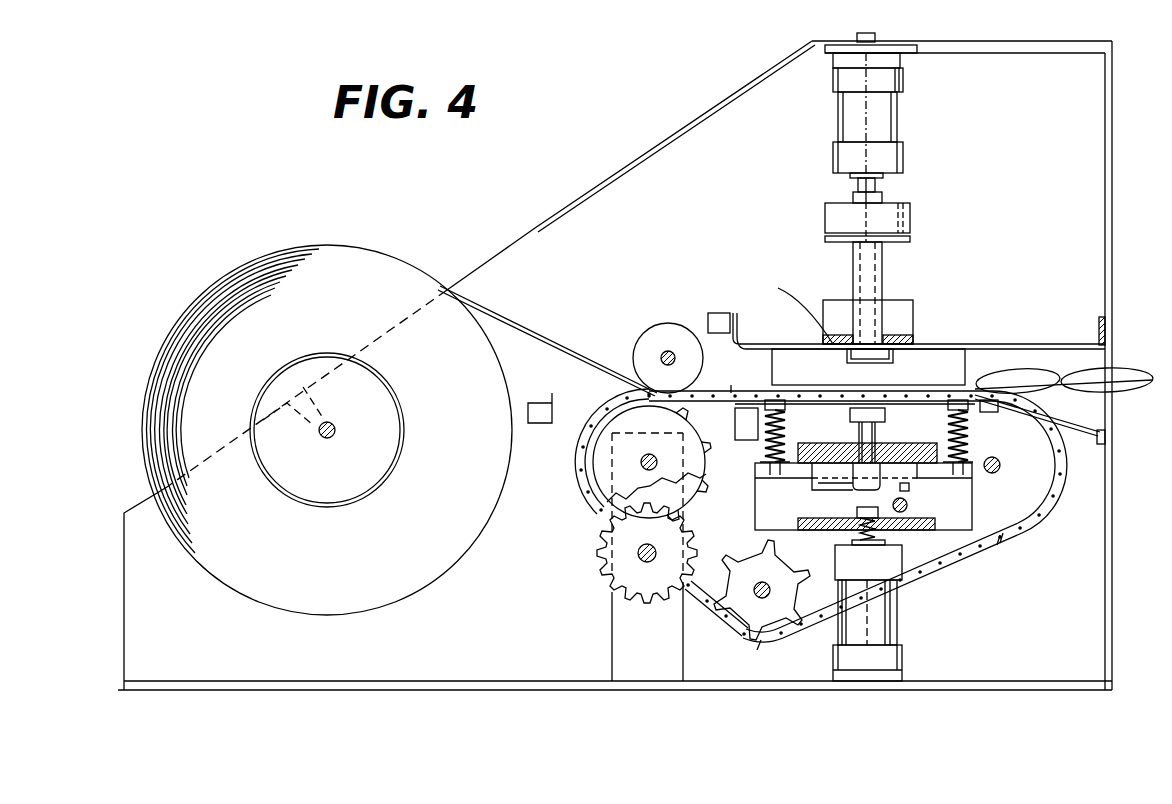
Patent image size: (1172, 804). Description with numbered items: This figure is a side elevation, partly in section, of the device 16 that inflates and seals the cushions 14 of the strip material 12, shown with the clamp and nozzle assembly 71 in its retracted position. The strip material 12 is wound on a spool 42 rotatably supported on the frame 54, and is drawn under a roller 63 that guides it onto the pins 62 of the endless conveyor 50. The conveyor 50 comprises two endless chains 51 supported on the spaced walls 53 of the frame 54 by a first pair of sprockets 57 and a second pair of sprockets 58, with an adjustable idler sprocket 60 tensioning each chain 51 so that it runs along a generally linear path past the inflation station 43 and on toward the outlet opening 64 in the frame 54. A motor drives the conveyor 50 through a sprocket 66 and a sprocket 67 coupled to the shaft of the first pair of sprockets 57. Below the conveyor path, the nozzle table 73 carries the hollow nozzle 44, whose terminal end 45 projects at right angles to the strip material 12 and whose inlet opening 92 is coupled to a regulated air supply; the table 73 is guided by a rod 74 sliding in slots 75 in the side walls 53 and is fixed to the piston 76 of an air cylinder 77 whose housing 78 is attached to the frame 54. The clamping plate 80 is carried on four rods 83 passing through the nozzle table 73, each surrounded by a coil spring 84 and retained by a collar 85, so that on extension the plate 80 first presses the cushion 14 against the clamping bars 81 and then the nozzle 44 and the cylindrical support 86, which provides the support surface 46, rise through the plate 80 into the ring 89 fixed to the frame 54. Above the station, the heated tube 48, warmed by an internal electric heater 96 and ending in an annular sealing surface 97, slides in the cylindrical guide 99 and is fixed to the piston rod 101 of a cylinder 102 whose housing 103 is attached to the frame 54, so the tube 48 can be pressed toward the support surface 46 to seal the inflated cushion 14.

The strip material 12 is at (532, 323).
The inflatable cushion 14 is at (1040, 372).
The device 16 is at (1014, 36).
The spool 42 is at (312, 506).
The inflation station 43 is at (908, 364).
The nozzle 44 is at (872, 399).
The terminal end 45 is at (868, 395).
The support surface 46 is at (850, 413).
The heated tube 48 is at (860, 340).
The endless conveyor 50 is at (1031, 532).
The endless chain 51 is at (1000, 538).
The wall 53 is at (1052, 120).
The frame 54 is at (1112, 155).
The first pair of sprockets 57 is at (584, 463).
The second pair of sprockets 58 is at (1030, 488).
The idler sprocket 60 is at (776, 610).
The pin 62 is at (733, 388).
The roller 63 is at (669, 322).
The outlet opening 64 is at (1112, 357).
The sprocket 66 is at (606, 572).
The sprocket 67 is at (601, 504).
The clamp and nozzle assembly 71 is at (812, 534).
The nozzle table 73 is at (756, 508).
The rod 74 is at (902, 513).
The slot 75 is at (912, 487).
The piston 76 is at (863, 532).
The air cylinder 77 is at (897, 622).
The housing 78 is at (904, 660).
The clamping plate 80 is at (965, 369).
The clamping bar 81 is at (965, 360).
The rod 83 is at (766, 452).
The coil spring 84 is at (800, 440).
The retaining collar 85 is at (762, 481).
The cylindrical support 86 is at (860, 436).
The ring 89 is at (834, 350).
The inlet opening 92 is at (828, 490).
The electric heater 96 is at (882, 276).
The sealing surface 97 is at (888, 348).
The cylindrical guide 99 is at (791, 309).
The piston rod 101 is at (878, 187).
The cylinder 102 is at (893, 118).
The housing 103 is at (903, 77).